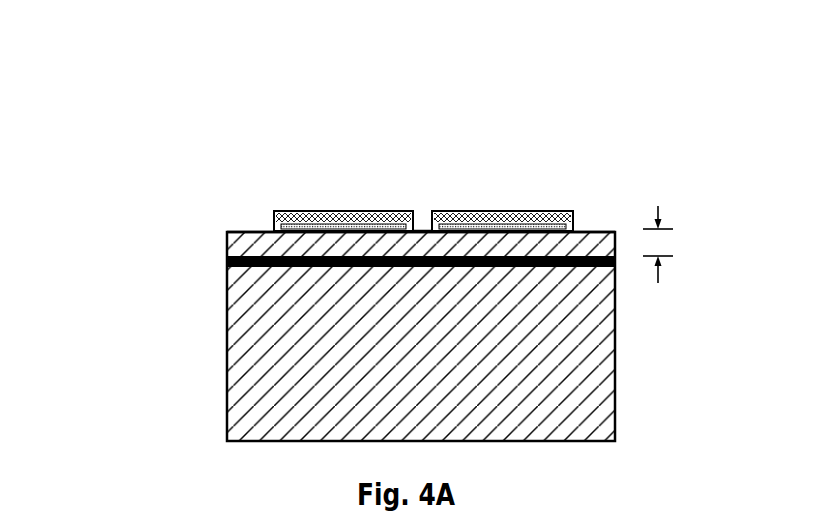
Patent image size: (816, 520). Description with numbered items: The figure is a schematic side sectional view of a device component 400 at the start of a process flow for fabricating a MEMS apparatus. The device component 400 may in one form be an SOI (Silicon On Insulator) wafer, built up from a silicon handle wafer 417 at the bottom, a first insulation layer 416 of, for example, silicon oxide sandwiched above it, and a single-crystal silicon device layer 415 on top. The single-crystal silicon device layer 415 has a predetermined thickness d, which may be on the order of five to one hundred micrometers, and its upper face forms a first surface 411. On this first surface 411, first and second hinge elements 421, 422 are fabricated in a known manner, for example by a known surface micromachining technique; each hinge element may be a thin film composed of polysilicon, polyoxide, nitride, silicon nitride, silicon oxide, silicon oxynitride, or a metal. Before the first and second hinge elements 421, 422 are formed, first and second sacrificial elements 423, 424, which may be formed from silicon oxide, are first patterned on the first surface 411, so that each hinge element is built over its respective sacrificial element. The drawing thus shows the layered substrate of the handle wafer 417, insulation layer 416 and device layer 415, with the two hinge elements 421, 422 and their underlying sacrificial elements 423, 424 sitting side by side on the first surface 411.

The device component 400 is at (156, 94).
The first surface 411 is at (422, 212).
The single-crystal silicon device layer 415 is at (227, 234).
The first insulation layer 416 is at (227, 262).
The handle wafer 417 is at (615, 320).
The first hinge element 421 is at (368, 211).
The second hinge element 422 is at (528, 212).
The first sacrificial element 423 is at (296, 211).
The second sacrificial element 424 is at (545, 211).